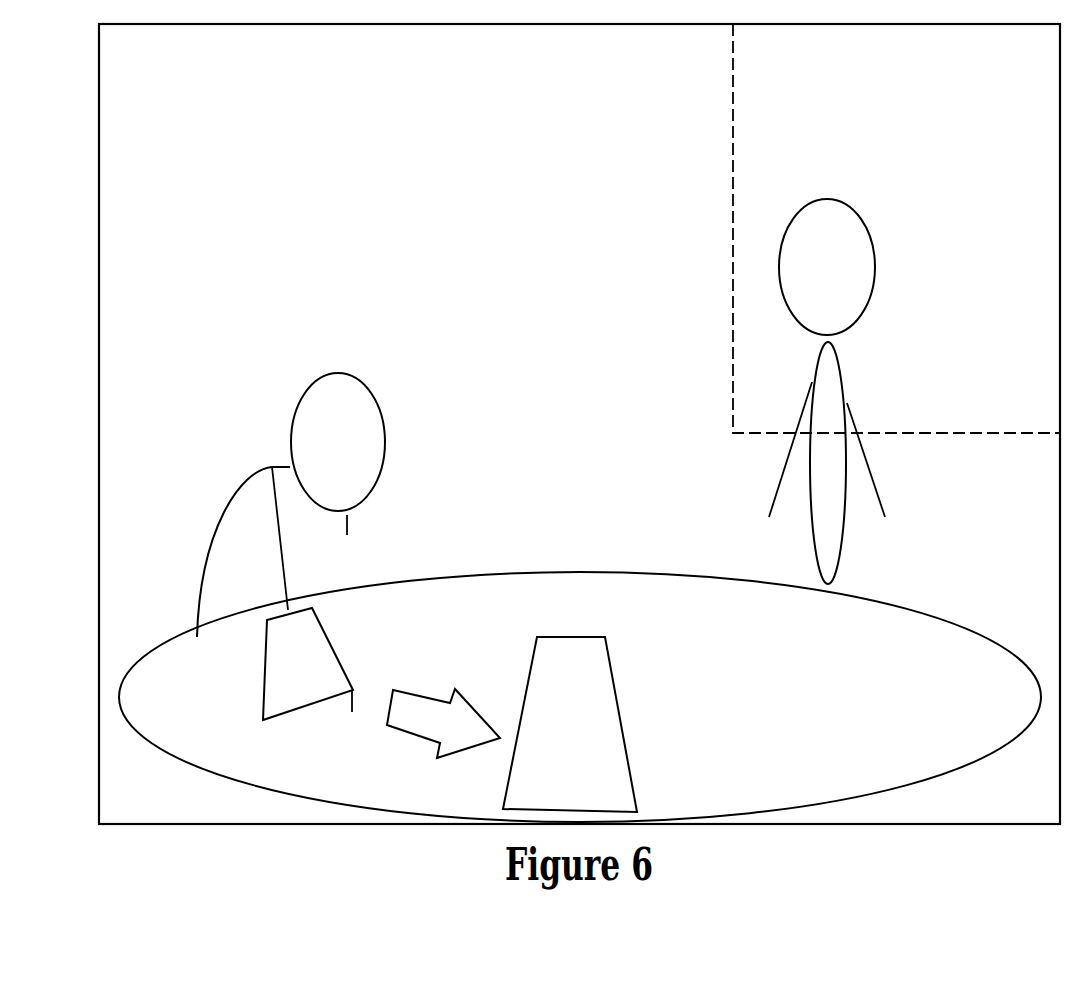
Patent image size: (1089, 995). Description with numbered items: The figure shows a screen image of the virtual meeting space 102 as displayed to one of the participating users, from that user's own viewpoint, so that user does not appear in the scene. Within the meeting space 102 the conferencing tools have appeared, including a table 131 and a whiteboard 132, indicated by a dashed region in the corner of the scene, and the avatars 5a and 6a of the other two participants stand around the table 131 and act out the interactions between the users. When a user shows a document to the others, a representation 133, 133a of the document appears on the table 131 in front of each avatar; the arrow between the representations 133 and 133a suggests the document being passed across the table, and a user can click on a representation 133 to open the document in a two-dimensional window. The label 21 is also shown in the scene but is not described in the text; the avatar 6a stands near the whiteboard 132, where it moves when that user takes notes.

The virtual meeting space 102 is at (243, 825).
The room 21 is at (331, 148).
The whiteboard 132 is at (732, 342).
The table 131 is at (883, 695).
The avatar 5a is at (332, 432).
The avatar 6a is at (830, 259).
The representation of a document 133 is at (352, 698).
The representation of a document 133a is at (640, 787).